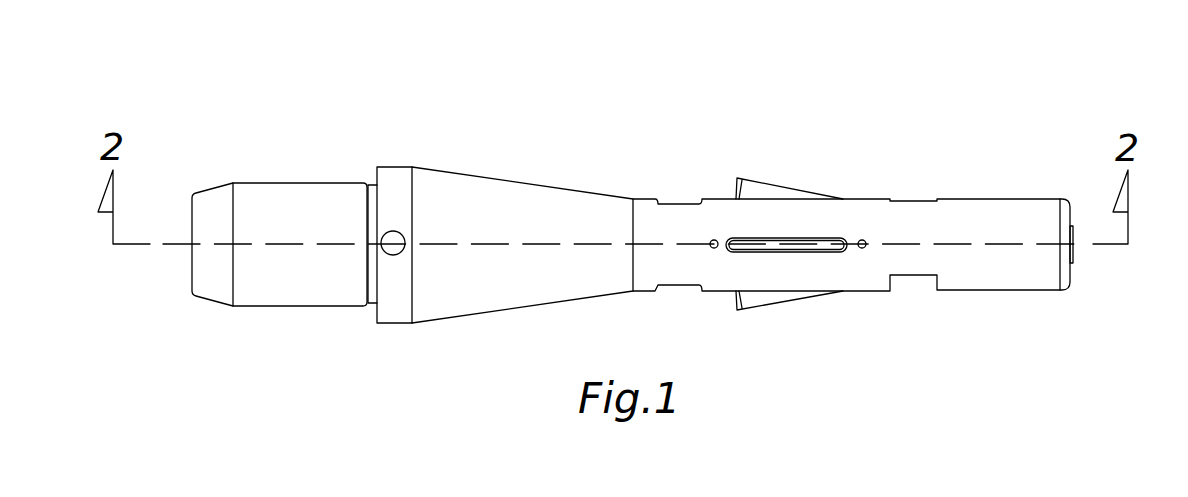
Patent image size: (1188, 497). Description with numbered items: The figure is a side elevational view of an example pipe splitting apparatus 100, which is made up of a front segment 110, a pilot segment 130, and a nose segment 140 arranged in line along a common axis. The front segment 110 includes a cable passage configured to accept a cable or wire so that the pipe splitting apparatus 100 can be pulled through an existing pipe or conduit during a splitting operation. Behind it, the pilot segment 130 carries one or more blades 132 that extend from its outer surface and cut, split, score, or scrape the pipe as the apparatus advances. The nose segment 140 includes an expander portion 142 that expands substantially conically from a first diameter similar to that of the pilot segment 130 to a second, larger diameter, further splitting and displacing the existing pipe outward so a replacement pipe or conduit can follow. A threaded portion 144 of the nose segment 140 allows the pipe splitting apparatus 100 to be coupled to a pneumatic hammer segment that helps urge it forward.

The pipe splitting apparatus 100 is at (1083, 80).
The front segment 110 is at (1007, 186).
The pilot segment 130 is at (716, 178).
The blades 132 is at (763, 182).
The nose segment 140 is at (428, 143).
The expander portion 142 is at (448, 190).
The threaded portion 144 is at (285, 190).